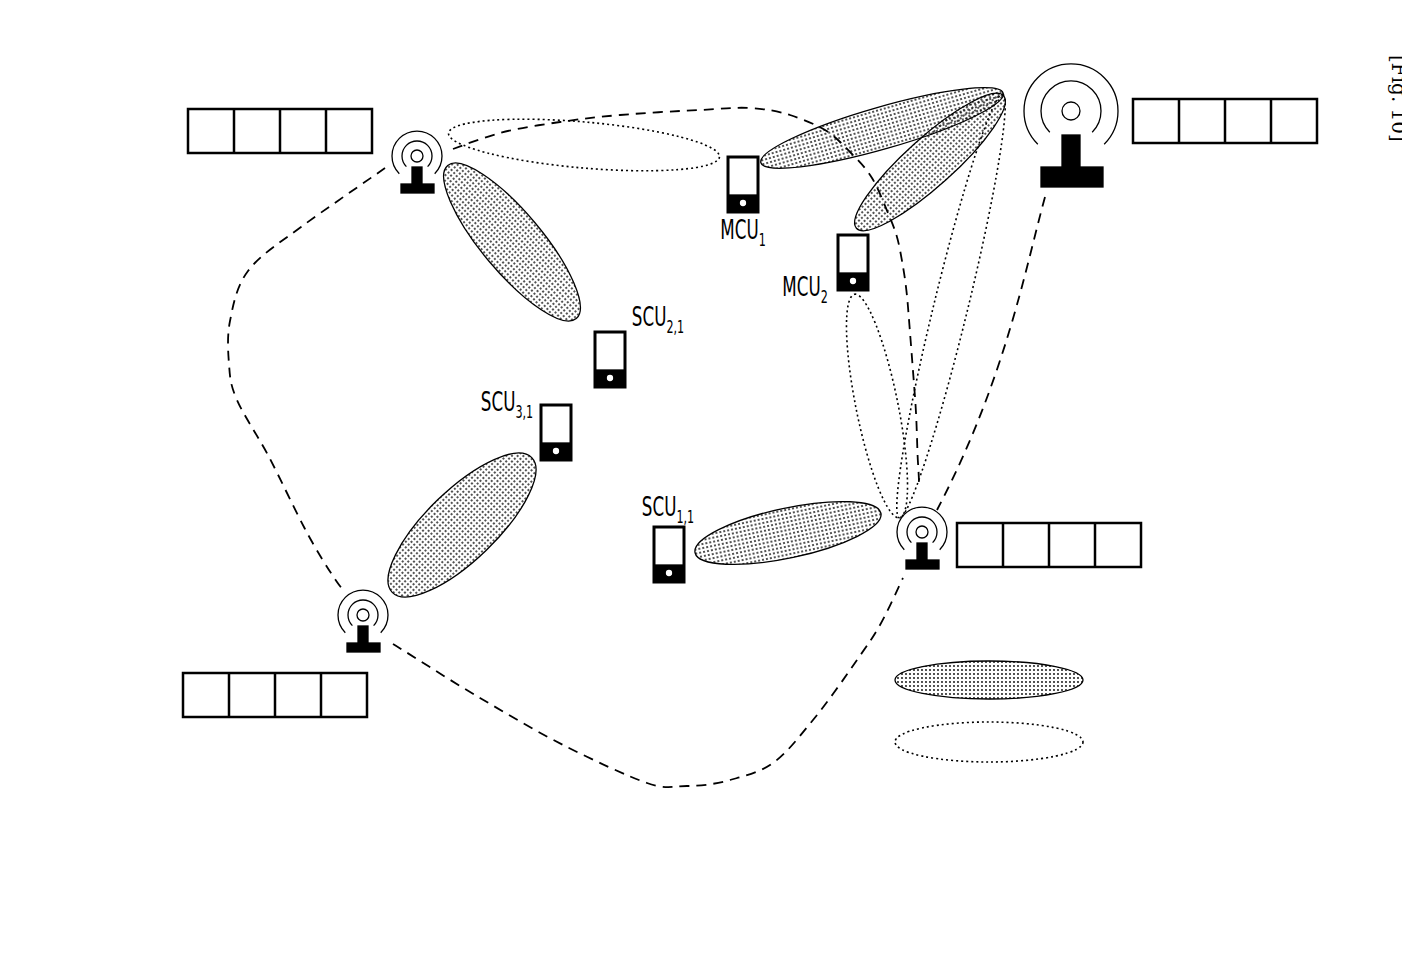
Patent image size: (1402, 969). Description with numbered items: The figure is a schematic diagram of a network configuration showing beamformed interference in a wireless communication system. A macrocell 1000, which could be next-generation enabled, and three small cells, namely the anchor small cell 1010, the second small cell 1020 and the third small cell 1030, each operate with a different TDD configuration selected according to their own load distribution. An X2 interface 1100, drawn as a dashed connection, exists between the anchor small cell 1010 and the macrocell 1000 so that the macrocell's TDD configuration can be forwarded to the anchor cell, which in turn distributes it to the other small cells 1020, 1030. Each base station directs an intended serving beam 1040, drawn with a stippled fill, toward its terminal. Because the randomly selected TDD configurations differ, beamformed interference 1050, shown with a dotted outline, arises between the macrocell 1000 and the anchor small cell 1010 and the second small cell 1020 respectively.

The macrocell MC 1000 is at (1170, 161).
The anchor small cell SC1 1010 is at (1019, 567).
The small cell SC2 1020 is at (315, 160).
The small cell SC3 1030 is at (285, 653).
The serving beam 1040 is at (1167, 667).
The beamformed interference 1050 is at (1288, 723).
The X2 interface 1100 is at (593, 447).